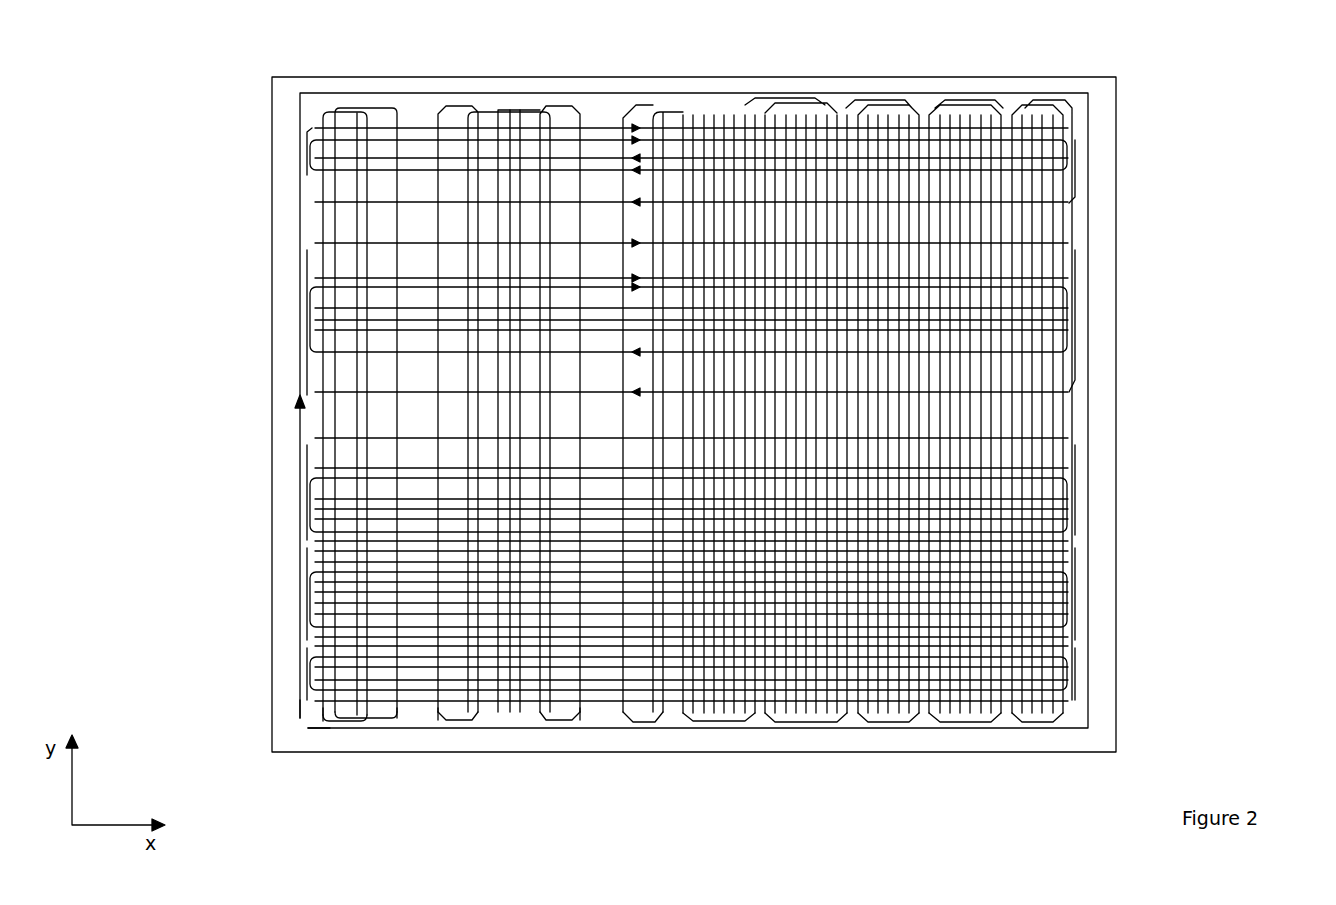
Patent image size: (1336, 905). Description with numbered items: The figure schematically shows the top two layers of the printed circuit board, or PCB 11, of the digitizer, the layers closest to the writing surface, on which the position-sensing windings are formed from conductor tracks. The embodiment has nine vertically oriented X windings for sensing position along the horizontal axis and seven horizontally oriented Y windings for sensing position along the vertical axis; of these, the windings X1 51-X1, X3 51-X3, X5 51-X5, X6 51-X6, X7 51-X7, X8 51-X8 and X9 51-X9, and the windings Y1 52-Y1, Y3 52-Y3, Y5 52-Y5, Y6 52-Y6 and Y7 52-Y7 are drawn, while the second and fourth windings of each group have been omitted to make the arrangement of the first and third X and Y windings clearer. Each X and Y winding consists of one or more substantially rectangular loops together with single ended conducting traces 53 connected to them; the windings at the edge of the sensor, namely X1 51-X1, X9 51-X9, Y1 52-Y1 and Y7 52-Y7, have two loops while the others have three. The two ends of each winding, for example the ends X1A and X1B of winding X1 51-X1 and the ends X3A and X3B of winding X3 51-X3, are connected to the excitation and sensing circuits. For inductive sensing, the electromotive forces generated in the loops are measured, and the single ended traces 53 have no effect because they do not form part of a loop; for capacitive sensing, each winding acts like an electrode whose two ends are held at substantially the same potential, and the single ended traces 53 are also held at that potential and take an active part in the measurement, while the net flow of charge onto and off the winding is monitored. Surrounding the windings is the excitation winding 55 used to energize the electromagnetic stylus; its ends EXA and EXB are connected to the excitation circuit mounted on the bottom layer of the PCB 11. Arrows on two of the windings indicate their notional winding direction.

The PCB 11 is at (1116, 86).
The excitation winding 55 is at (1045, 93).
The X winding X1 51-X1 is at (375, 107).
The X winding X3 51-X3 is at (520, 107).
The X winding X5 51-X5 is at (650, 105).
The X winding X6 51-X6 is at (745, 105).
The X winding X7 51-X7 is at (878, 105).
The X winding X8 51-X8 is at (965, 105).
The X winding X9 51-X9 is at (1060, 105).
The Y winding Y1 52-Y1 is at (1088, 152).
The Y winding Y3 52-Y3 is at (1088, 258).
The Y winding Y5 52-Y5 is at (1088, 448).
The Y winding Y6 52-Y6 is at (1088, 548).
The Y winding Y7 52-Y7 is at (1088, 692).
The single ended conducting traces 53 is at (355, 228).
The end of excitation winding EXA is at (300, 718).
The end of excitation winding EXB is at (313, 730).
The end of winding X1 X1A is at (318, 708).
The end of winding X1 X1B is at (392, 710).
The end of winding X3 X3A is at (465, 712).
The end of winding X3 X3B is at (590, 712).